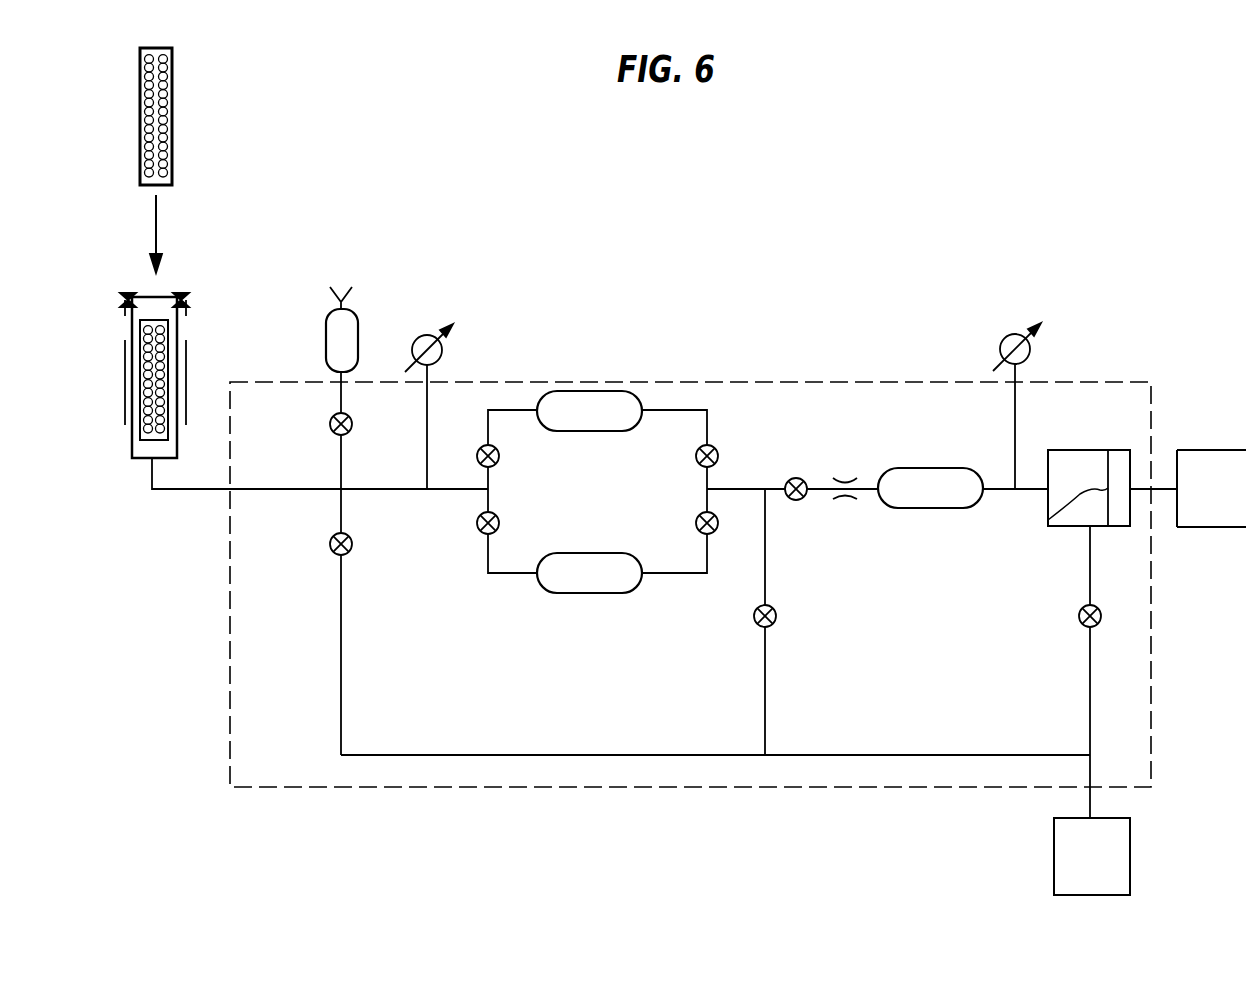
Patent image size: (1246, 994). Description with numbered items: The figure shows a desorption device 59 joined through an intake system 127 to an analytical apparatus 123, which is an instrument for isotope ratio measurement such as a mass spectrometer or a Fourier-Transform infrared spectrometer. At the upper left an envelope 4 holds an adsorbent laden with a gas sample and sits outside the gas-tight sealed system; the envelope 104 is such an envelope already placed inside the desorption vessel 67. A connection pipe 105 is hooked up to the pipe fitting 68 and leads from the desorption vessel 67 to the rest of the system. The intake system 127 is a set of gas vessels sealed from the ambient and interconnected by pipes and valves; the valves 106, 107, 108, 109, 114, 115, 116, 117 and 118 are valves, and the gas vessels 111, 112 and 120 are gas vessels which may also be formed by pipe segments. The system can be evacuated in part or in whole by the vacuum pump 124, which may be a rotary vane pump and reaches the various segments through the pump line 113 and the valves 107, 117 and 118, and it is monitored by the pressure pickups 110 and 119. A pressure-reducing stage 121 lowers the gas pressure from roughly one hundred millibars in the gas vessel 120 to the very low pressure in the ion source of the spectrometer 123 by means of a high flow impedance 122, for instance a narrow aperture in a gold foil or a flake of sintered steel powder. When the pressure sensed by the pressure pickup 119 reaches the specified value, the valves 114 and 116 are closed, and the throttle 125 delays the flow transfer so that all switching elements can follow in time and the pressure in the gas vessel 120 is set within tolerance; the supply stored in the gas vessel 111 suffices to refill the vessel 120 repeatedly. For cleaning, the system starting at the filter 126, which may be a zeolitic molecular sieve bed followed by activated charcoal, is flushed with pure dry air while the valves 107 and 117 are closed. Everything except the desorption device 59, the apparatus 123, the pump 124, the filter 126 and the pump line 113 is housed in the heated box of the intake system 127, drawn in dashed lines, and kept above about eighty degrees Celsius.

The envelope 4 is at (142, 143).
The envelope inside the desorption vessel 104 is at (146, 331).
The desorption device 59 is at (110, 407).
The desorption vessel 67 is at (132, 452).
The pipe fitting 68 is at (151, 465).
The connection pipe 105 is at (258, 493).
The valve 106 is at (328, 432).
The valve 107 is at (328, 551).
The valve 108 is at (478, 466).
The valve 109 is at (478, 530).
The pressure pickup 110 is at (416, 340).
The gas vessel 111 is at (608, 424).
The gas vessel 112 is at (608, 586).
The pump line 113 is at (590, 755).
The valve 114 is at (718, 462).
The valve 115 is at (718, 523).
The valve 116 is at (790, 500).
The valve 117 is at (752, 620).
The valve 118 is at (1077, 620).
The pressure pickup 119 is at (1003, 339).
The gas vessel 120 is at (949, 501).
The pressure-reducing stage 121 is at (1055, 450).
The high flow impedance 122 is at (1048, 519).
The analytical apparatus 123 is at (1232, 498).
The vacuum pump 124 is at (1111, 862).
The throttle 125 is at (840, 478).
The filter 126 is at (326, 342).
The intake system 127 is at (302, 731).